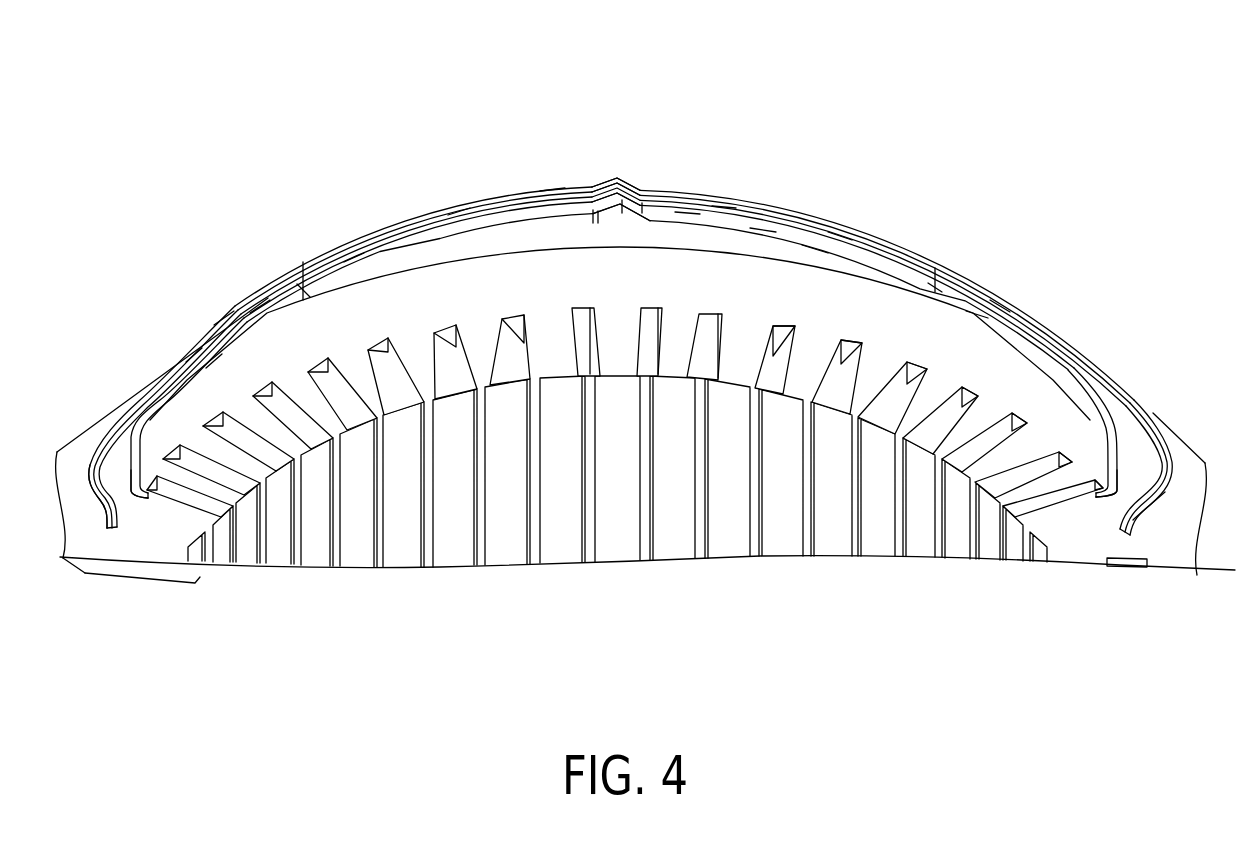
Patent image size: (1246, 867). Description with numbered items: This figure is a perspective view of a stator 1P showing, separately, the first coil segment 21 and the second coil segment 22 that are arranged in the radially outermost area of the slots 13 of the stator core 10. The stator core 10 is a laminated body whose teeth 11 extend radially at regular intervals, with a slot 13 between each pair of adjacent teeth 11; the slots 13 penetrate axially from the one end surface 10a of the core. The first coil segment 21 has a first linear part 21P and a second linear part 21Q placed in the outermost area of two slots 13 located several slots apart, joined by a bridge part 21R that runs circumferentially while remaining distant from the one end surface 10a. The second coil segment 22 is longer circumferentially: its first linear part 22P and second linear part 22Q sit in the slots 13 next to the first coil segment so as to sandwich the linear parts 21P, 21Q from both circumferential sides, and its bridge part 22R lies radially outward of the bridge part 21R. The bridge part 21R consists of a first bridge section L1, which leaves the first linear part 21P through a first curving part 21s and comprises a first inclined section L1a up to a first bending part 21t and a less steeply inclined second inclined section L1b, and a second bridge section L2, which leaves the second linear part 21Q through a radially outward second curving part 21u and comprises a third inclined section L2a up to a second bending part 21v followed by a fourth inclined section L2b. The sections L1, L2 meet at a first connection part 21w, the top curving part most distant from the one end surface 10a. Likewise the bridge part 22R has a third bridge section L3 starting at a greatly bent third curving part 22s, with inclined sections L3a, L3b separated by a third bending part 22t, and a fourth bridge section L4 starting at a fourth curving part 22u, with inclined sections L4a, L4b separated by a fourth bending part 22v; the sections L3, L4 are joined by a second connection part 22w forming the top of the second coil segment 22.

The stator 1P is at (160, 125).
The stator core 10 is at (87, 547).
The one end surface 10a is at (107, 542).
The teeth 11 is at (300, 478).
The slot 13 is at (345, 478).
The first coil segment 21 is at (532, 215).
The second coil segment 22 is at (490, 202).
The first curving part 21s is at (146, 423).
The third curving part 22s is at (92, 455).
The first bending part 21t is at (303, 276).
The third bending part 22t is at (313, 296).
The second curving part 21u is at (1106, 457).
The fourth curving part 22u is at (1160, 487).
The second bending part 21v is at (933, 288).
The fourth bending part 22v is at (928, 283).
The first connection part 21w is at (627, 197).
The second connection part 22w is at (598, 193).
The bridge part 21R is at (687, 214).
The bridge part 22R is at (553, 200).
The first linear part 21P is at (150, 490).
The first linear part 22P is at (162, 470).
The second linear part 21Q is at (1098, 492).
The second linear part 22Q is at (1122, 512).
The first bridge section L1 is at (258, 316).
The second bridge section L2 is at (762, 226).
The third bridge section L3 is at (220, 311).
The fourth bridge section L4 is at (722, 204).
The first inclined section L1a is at (214, 358).
The second inclined section L1b is at (457, 211).
The third inclined section L2a is at (977, 316).
The fourth inclined section L2b is at (815, 249).
The first inclined section L3a is at (193, 353).
The second inclined section L3b is at (351, 256).
The third inclined section L4a is at (1000, 306).
The fourth inclined section L4b is at (840, 232).